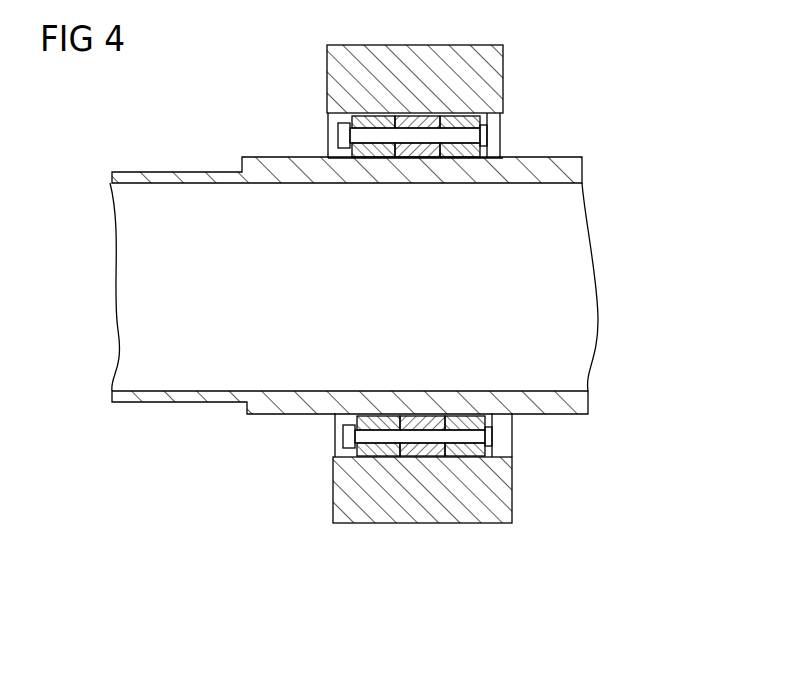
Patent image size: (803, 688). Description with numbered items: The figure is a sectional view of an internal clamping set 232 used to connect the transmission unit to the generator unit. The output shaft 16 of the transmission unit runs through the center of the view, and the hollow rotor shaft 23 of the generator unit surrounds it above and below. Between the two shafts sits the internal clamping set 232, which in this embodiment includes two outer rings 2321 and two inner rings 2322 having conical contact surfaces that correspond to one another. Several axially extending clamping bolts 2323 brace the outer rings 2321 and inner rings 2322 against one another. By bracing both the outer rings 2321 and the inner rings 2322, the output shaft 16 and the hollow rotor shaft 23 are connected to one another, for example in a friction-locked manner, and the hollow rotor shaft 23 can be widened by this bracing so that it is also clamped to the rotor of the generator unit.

The output shaft 16 is at (572, 170).
The hollow rotor shaft 23 is at (490, 72).
The internal clamping set 232 is at (286, 91).
The outer rings 2321 is at (467, 450).
The inner rings 2322 is at (420, 157).
The clamping bolts 2323 is at (338, 135).